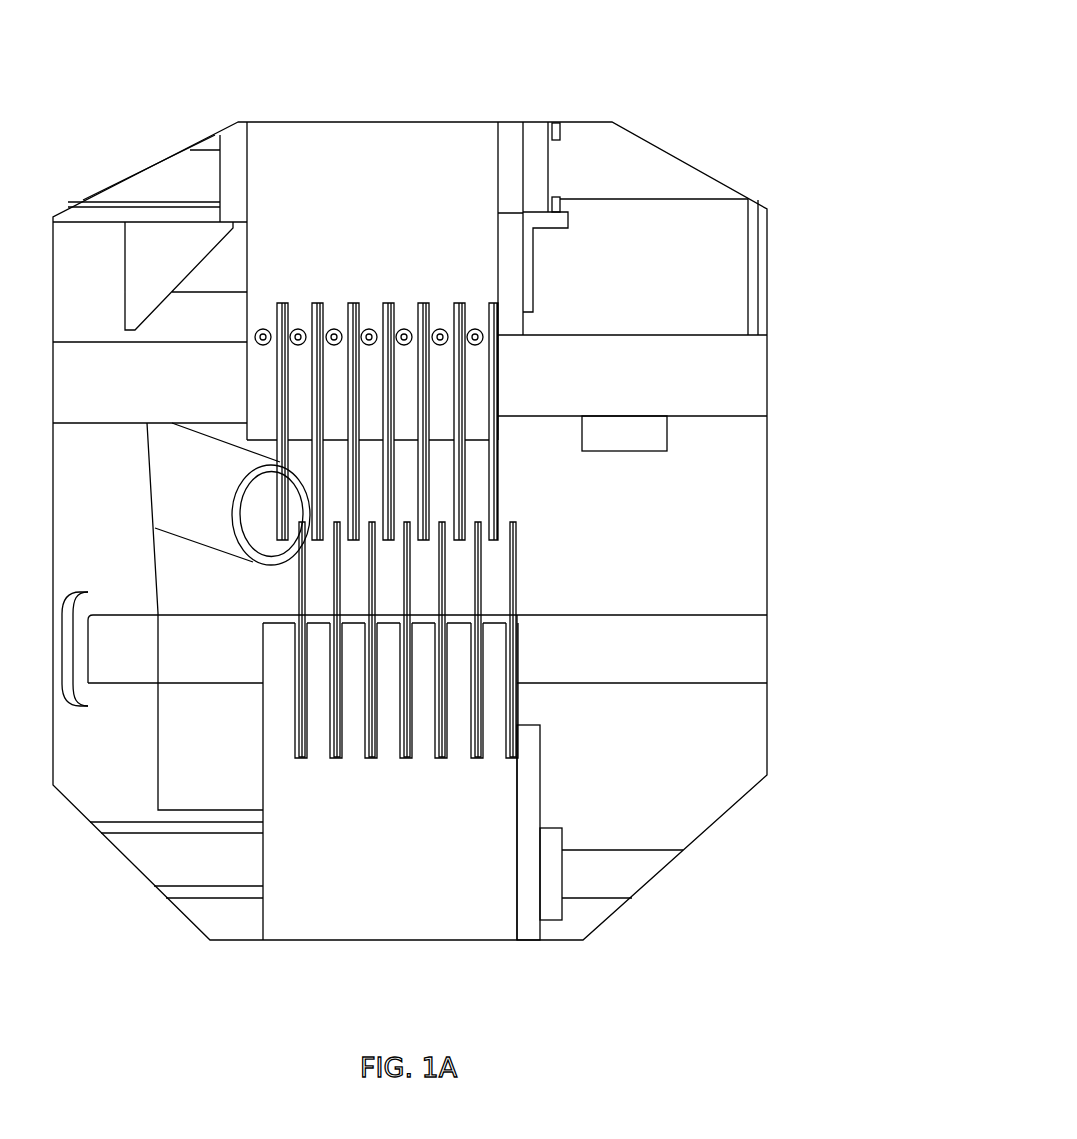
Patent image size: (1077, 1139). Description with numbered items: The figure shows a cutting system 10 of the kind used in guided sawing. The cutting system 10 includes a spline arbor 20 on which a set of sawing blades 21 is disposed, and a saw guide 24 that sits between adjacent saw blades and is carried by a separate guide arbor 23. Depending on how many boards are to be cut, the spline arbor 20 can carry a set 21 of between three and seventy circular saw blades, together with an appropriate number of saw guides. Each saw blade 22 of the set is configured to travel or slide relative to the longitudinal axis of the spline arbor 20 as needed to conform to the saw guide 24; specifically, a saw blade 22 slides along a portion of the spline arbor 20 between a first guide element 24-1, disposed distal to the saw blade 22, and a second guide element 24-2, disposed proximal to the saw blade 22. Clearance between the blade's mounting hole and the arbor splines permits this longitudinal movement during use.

The cutting system 10 is at (662, 93).
The spline arbor 20 is at (682, 362).
The set of sawing blades 21 is at (503, 483).
The saw blade 22 is at (465, 356).
The guide arbor 23 is at (652, 183).
The saw guide 24 is at (480, 254).
The first guide element 24-1 is at (478, 403).
The second guide element 24-2 is at (442, 415).